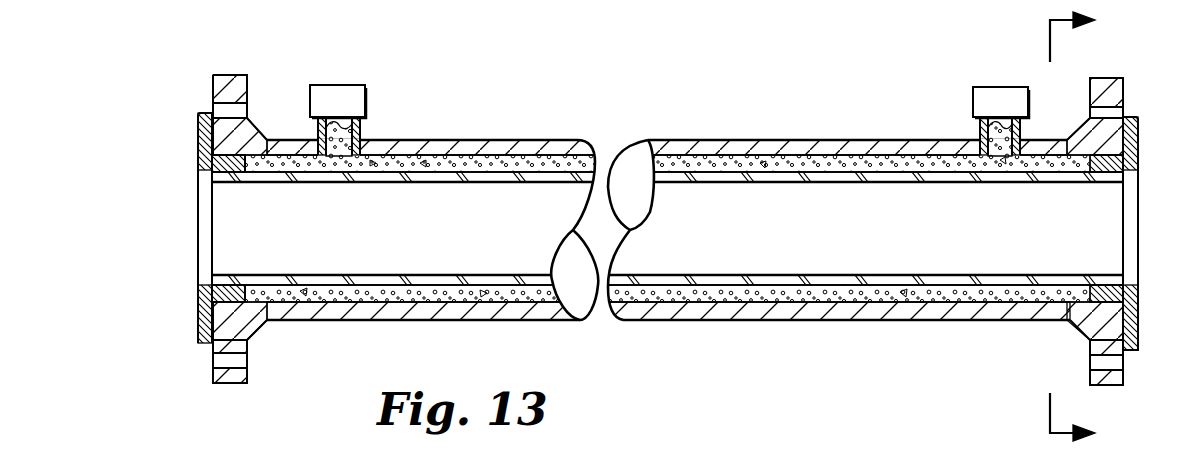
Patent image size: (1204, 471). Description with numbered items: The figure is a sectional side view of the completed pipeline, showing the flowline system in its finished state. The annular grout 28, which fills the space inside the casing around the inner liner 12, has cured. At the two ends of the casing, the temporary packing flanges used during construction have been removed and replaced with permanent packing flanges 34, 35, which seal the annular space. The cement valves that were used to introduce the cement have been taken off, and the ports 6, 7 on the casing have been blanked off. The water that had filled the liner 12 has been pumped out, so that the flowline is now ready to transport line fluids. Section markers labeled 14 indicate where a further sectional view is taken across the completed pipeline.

The port 6 is at (360, 132).
The port 7 is at (980, 130).
The liner 12 is at (443, 172).
The annular grout 28 is at (512, 164).
The permanent packing flange 34 is at (198, 113).
The permanent packing flange 35 is at (1138, 116).
The section line 14- 14 is at (1092, 228).